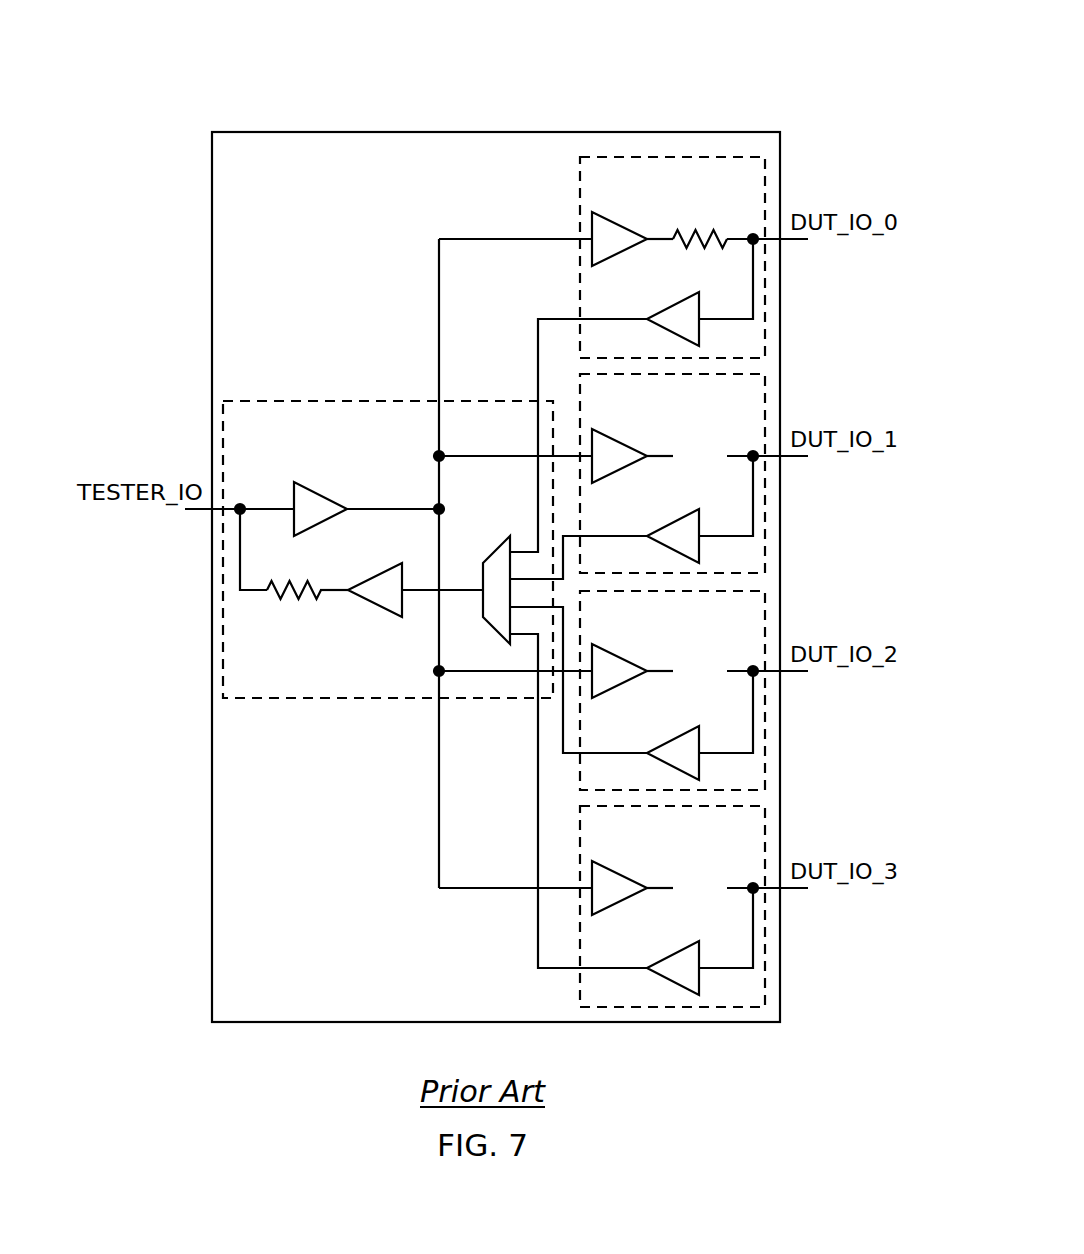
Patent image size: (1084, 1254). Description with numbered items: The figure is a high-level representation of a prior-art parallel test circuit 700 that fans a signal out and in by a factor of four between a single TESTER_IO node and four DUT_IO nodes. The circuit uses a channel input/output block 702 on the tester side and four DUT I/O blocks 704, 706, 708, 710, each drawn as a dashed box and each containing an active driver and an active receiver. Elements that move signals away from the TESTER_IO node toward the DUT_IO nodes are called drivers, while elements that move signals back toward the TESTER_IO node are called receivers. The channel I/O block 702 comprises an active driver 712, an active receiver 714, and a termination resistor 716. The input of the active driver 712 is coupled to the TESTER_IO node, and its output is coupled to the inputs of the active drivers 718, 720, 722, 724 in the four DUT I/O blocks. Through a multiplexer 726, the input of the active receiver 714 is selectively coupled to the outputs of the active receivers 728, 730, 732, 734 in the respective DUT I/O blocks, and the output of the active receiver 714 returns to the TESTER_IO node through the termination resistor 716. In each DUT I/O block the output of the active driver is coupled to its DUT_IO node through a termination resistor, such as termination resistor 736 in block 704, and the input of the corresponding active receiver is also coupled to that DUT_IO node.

The parallel test circuit 700 is at (556, 93).
The channel input/output block 702 is at (350, 400).
The DUT I/O block 704 is at (765, 183).
The DUT I/O block 706 is at (765, 401).
The DUT I/O block 708 is at (765, 617).
The DUT I/O block 710 is at (765, 833).
The active driver 712 is at (327, 496).
The active receiver 714 is at (375, 605).
The termination resistor 716 is at (293, 574).
The active driver 718 is at (620, 223).
The active driver 720 is at (620, 440).
The active driver 722 is at (620, 655).
The active driver 724 is at (620, 871).
The multiplexer 726 is at (490, 561).
The active receiver 728 is at (675, 302).
The active receiver 730 is at (675, 519).
The active receiver 732 is at (675, 735).
The active receiver 734 is at (675, 951).
The termination resistor 736 is at (689, 227).